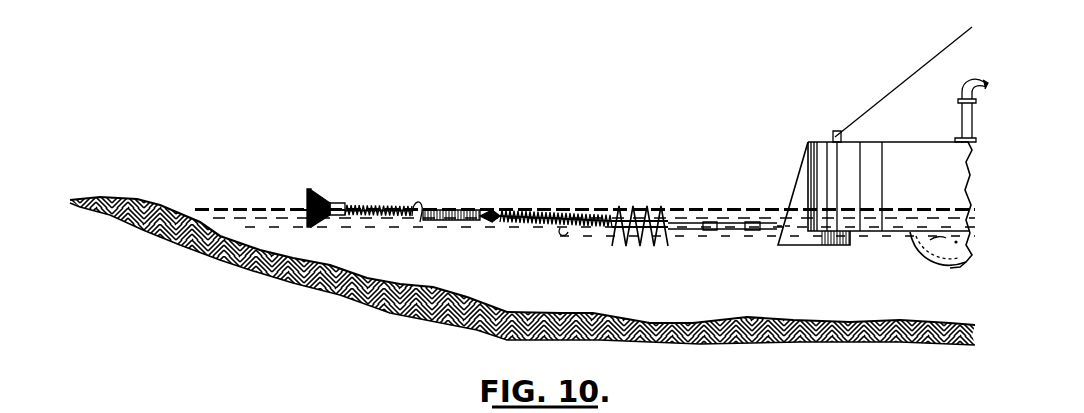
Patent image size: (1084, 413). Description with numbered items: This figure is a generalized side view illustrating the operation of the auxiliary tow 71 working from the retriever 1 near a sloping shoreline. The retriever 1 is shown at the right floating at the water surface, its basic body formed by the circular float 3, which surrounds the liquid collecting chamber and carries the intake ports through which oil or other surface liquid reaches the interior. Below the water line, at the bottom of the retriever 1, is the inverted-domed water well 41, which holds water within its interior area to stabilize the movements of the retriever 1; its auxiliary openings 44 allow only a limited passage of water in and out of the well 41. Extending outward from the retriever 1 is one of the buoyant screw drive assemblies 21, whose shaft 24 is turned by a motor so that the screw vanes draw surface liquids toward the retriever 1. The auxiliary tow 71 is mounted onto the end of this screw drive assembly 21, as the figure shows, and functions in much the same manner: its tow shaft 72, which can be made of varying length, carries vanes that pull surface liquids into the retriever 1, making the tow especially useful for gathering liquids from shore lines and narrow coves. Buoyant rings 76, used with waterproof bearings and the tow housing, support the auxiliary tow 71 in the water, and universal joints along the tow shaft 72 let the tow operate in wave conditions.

The retriever 1 is at (884, 76).
The circular float 3 is at (928, 184).
The screw drive assembly 21 is at (638, 202).
The shaft 24 is at (718, 232).
The water well 41 is at (950, 260).
The auxiliary openings 44 is at (916, 252).
The auxiliary tow 71 is at (321, 186).
The tow shaft 72 is at (378, 211).
The buoyant rings 76 is at (493, 207).